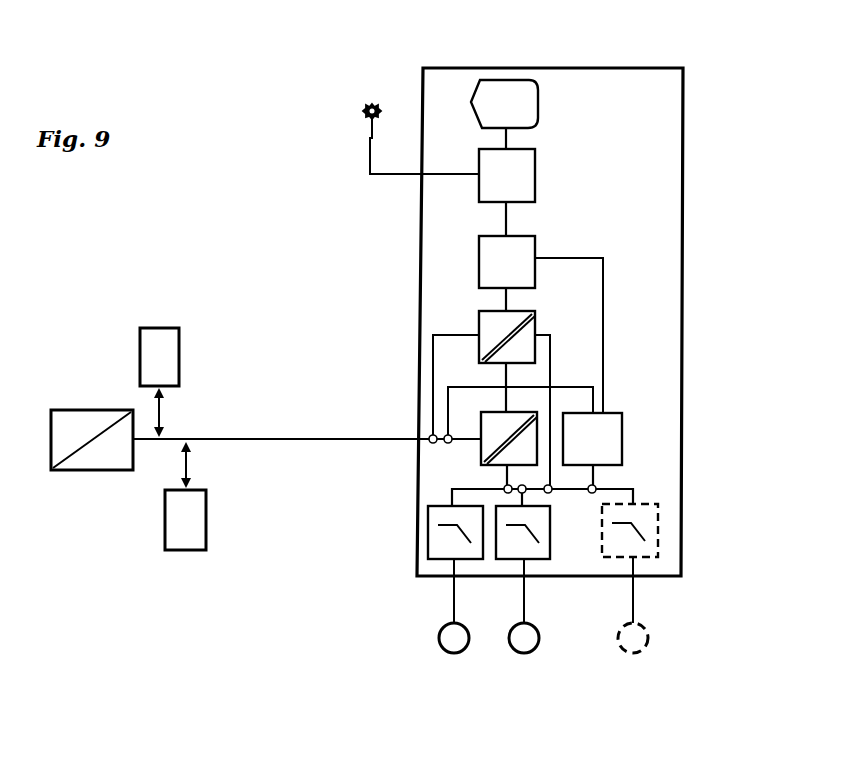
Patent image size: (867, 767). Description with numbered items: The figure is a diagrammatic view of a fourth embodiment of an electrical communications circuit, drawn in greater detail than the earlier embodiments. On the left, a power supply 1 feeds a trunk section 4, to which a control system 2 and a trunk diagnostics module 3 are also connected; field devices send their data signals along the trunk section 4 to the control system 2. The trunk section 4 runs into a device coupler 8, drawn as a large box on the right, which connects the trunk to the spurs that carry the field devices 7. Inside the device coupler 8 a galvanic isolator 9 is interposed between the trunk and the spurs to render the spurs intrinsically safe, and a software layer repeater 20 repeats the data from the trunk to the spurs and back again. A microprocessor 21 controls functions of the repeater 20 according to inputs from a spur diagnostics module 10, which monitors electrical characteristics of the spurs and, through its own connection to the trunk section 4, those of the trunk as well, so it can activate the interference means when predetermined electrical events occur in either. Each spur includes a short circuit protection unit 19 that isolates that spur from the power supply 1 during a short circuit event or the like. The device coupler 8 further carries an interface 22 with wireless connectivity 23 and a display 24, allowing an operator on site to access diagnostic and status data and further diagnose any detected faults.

The power supply 1 is at (103, 453).
The control system 2 is at (179, 343).
The trunk diagnostics module 3 is at (180, 532).
The trunk section 4 is at (325, 439).
The field device 7 is at (525, 640).
The device coupler 8 is at (657, 167).
The galvanic isolator 9 is at (481, 440).
The spur diagnostics module 10 is at (623, 430).
The short circuit protection unit 19 is at (447, 548).
The software layer repeater 20 is at (480, 318).
The microprocessor 21 is at (480, 250).
The interface 22 is at (521, 163).
The wireless connectivity 23 is at (370, 138).
The display 24 is at (471, 99).